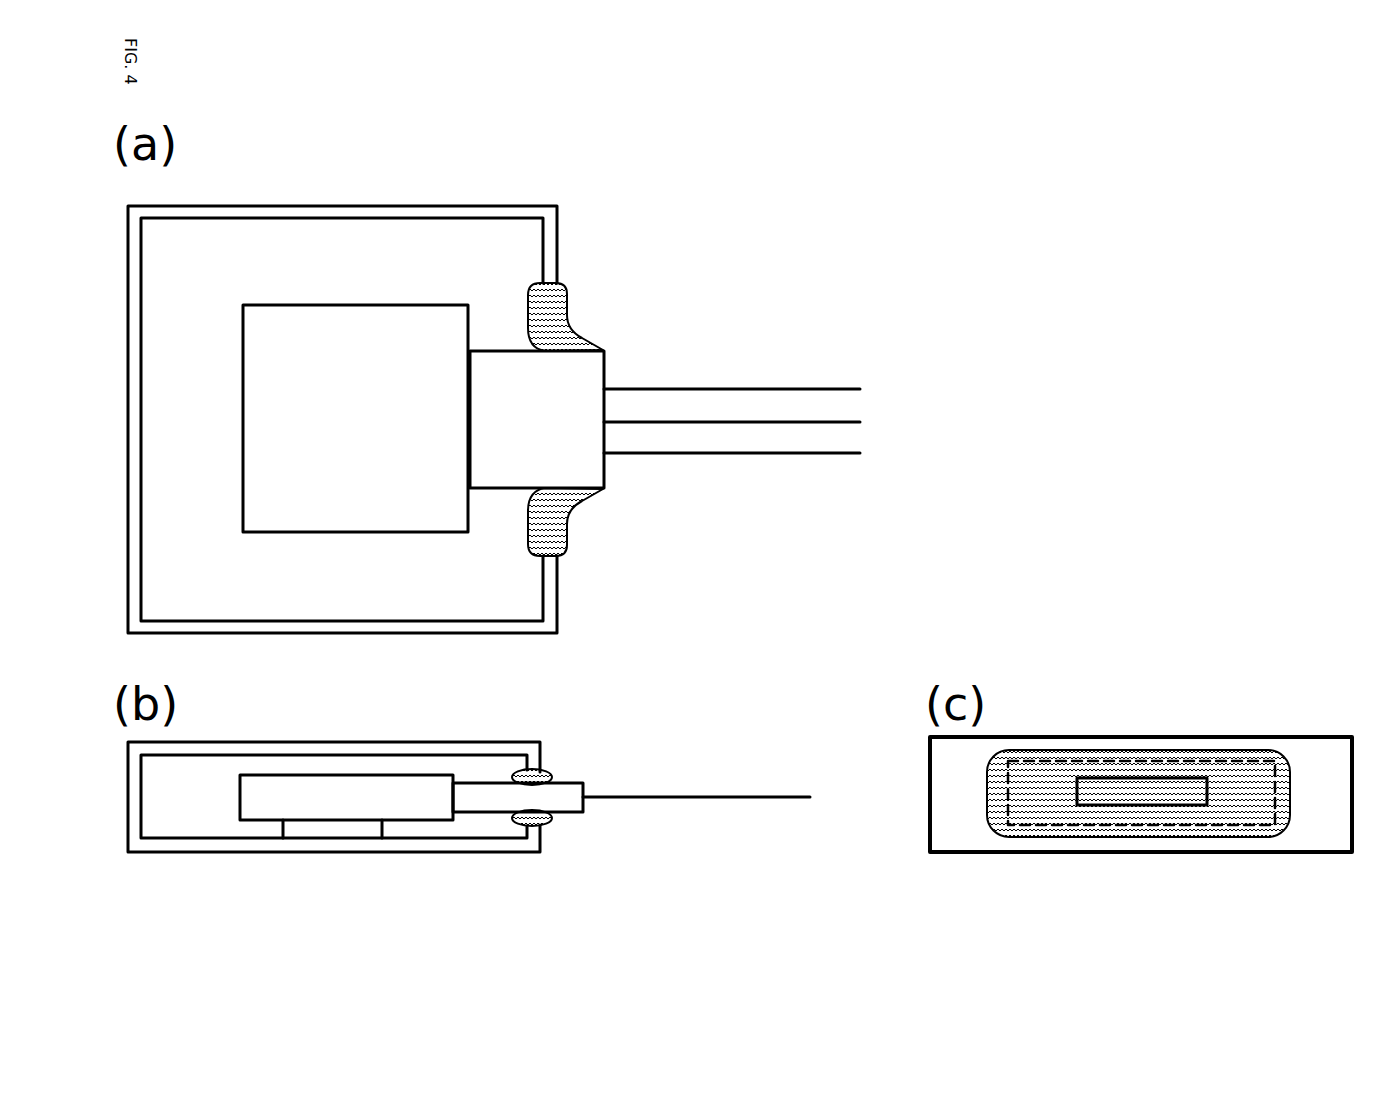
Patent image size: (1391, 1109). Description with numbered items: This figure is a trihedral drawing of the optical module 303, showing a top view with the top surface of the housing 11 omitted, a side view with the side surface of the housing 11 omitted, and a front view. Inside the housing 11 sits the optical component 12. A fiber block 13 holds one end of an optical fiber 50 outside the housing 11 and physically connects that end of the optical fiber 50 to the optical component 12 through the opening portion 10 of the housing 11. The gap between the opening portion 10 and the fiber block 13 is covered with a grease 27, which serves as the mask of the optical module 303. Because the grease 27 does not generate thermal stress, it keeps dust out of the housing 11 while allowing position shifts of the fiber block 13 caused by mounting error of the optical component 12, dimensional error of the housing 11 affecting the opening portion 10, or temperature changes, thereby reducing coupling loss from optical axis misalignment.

The optical module 303 is at (582, 180).
The housing 11 is at (431, 205).
The optical component 12 is at (361, 305).
The fiber block 13 is at (606, 483).
The optical fiber 50 is at (785, 466).
The opening portion 10 is at (883, 588).
The grease 27 is at (568, 318).